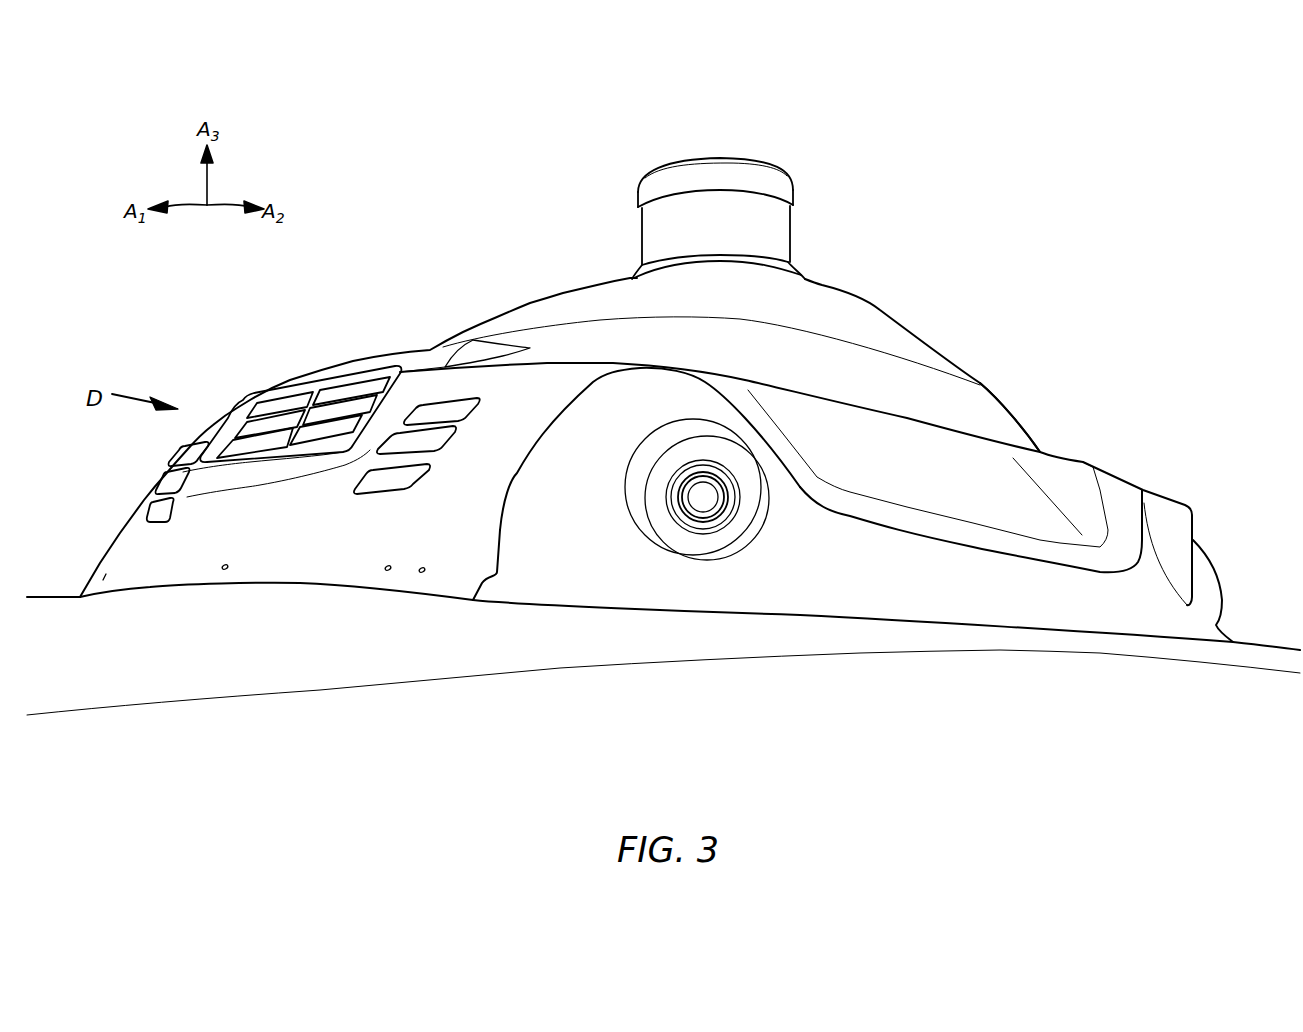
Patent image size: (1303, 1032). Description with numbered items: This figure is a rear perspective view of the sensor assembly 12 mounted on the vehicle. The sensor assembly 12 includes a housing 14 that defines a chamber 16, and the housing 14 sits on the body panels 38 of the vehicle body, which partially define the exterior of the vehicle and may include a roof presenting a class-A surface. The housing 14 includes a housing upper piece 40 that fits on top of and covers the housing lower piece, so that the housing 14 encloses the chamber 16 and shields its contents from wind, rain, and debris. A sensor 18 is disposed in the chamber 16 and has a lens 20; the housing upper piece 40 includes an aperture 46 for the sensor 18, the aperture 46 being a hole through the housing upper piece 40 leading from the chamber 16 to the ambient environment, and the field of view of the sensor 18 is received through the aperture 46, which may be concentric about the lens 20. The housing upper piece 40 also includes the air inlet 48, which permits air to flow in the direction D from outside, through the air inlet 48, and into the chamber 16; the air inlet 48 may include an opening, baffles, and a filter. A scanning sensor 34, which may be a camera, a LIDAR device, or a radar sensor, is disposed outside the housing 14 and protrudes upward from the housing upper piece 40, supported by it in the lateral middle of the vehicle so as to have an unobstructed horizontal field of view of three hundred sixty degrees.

The sensor assembly 12 is at (1052, 262).
The housing 14 is at (857, 324).
The chamber 16 is at (597, 437).
The sensor 18 is at (703, 527).
The lens 20 is at (693, 507).
The scanning sensor 34 is at (742, 158).
The body panels 38 is at (378, 650).
The housing upper piece 40 is at (1022, 425).
The apertures 46 is at (745, 503).
The air inlet 48 is at (257, 410).